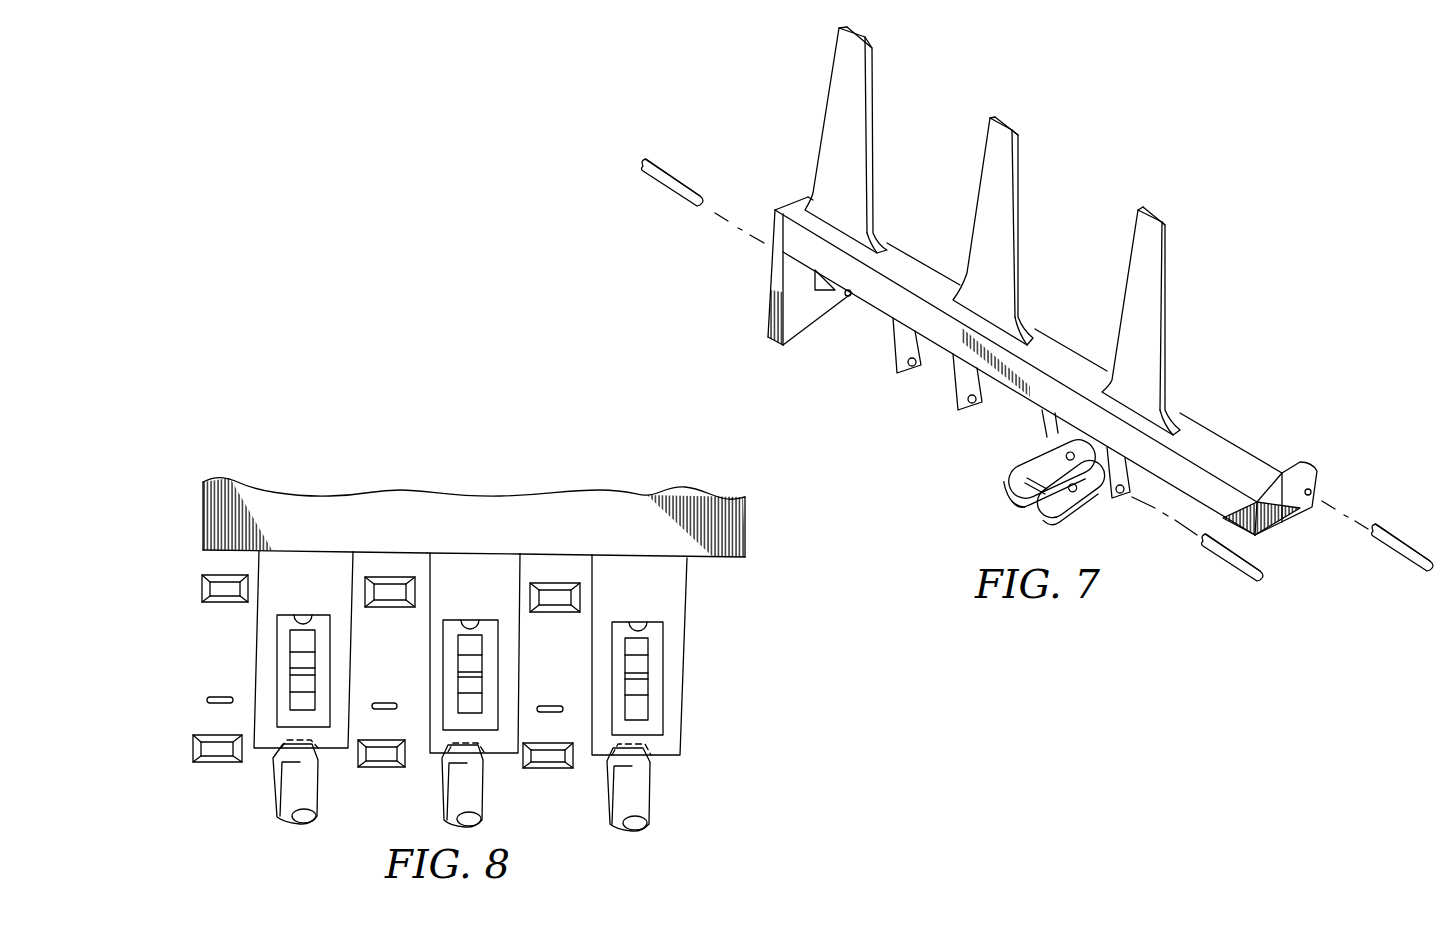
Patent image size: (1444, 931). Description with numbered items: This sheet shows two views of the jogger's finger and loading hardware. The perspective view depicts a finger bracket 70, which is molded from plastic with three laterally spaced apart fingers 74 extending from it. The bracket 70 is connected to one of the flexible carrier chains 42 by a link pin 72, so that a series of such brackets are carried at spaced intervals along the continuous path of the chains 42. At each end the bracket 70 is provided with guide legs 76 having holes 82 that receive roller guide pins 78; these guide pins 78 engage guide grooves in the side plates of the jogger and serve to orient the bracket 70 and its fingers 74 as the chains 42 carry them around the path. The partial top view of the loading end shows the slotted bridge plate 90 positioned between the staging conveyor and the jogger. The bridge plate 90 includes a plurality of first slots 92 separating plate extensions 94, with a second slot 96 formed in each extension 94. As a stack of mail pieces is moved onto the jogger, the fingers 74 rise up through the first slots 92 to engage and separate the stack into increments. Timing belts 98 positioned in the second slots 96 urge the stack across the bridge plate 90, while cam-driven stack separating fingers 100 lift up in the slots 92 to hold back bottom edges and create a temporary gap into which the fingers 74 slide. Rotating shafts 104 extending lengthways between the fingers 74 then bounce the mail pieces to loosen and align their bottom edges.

In FIG. 7, the chain 42 is at (1084, 507).
In FIG. 7, the finger bracket 70 is at (1222, 438).
In FIG. 7, the link pin 72 is at (1231, 560).
In FIG. 7, the finger 74 is at (835, 107).
In FIG. 8, the finger 74 is at (202, 583).
In FIG. 7, the guide leg 76 is at (772, 273).
In FIG. 7, the roller guide pin 78 is at (674, 178).
In FIG. 7, the hole 82 is at (848, 297).
In FIG. 8, the slotted bridge plate 90 is at (440, 492).
In FIG. 8, the first slot 92 is at (392, 552).
In FIG. 8, the plate extension 94 is at (330, 550).
In FIG. 8, the second slot 96 is at (297, 612).
In FIG. 8, the timing belt 98 is at (290, 660).
In FIG. 8, the stack separating finger 100 is at (208, 700).
In FIG. 8, the rotating shaft 104 is at (276, 790).